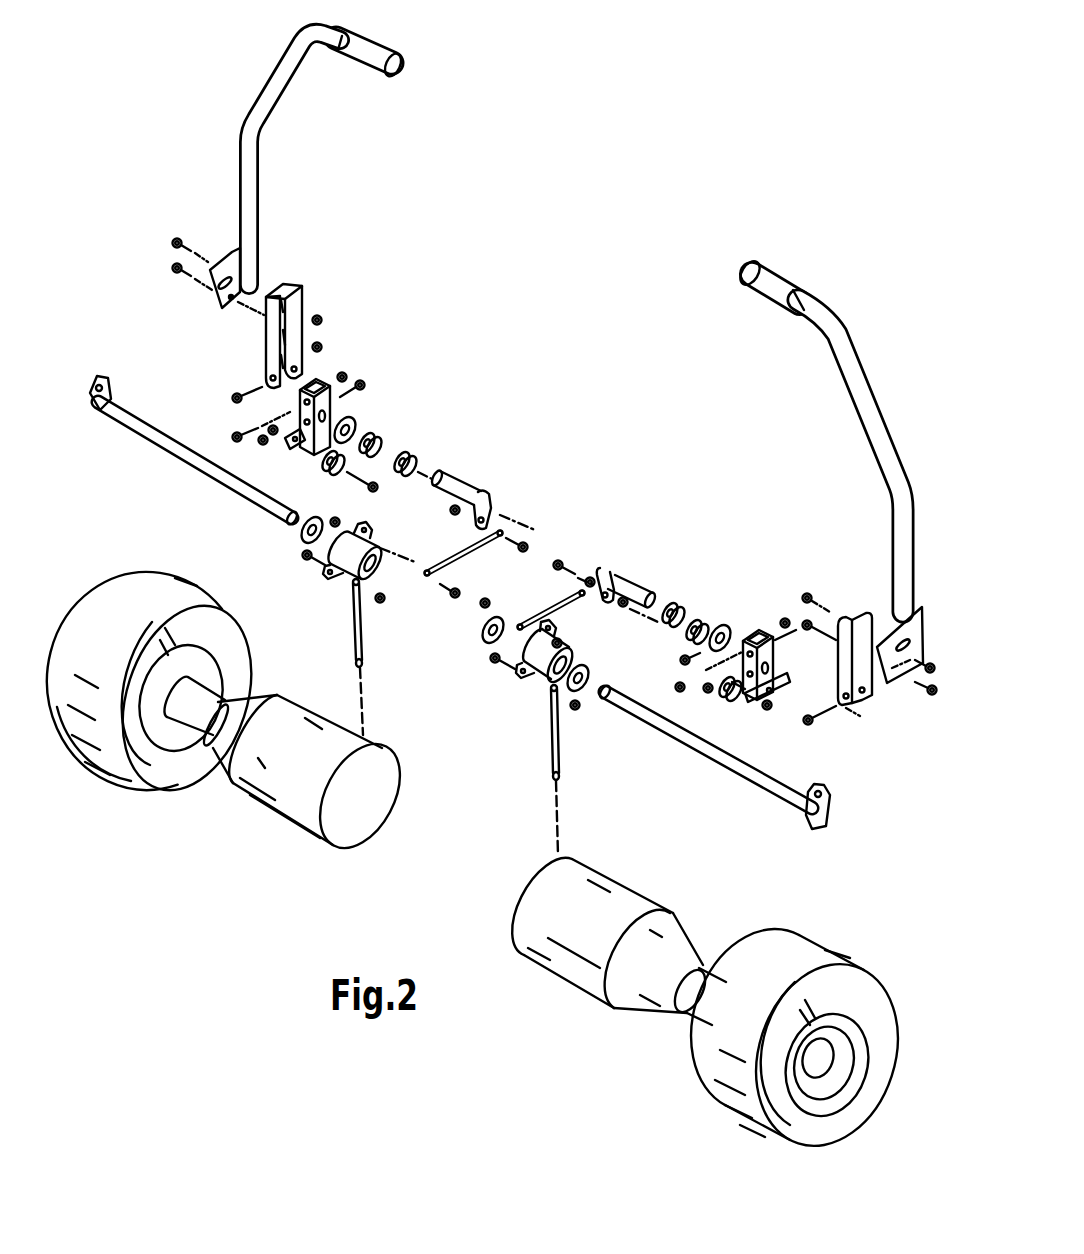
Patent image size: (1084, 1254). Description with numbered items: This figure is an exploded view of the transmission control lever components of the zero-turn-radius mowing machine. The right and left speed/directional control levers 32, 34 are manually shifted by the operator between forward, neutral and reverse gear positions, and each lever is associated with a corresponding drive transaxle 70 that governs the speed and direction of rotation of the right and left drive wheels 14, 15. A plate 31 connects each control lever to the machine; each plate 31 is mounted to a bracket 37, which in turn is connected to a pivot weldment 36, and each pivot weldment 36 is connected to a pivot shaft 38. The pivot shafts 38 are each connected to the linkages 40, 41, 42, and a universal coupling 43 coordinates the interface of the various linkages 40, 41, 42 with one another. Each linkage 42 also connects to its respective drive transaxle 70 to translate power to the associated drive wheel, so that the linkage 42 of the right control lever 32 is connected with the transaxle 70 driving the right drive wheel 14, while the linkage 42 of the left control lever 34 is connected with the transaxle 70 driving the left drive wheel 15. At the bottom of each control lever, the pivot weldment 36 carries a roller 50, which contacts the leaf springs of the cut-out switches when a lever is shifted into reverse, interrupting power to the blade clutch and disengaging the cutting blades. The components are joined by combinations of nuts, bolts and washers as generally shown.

The right drive wheel 14 is at (87, 657).
The left drive wheel 15 is at (739, 1017).
The plate 31 is at (232, 255).
The right speed/directional control lever 32 is at (253, 170).
The left speed/directional control lever 34 is at (883, 422).
The pivot weldment 36 is at (322, 386).
The bracket 37 is at (265, 333).
The pivot shaft 38 is at (458, 490).
The linkage 40 is at (549, 602).
The linkage 41 is at (240, 491).
The linkage 42 is at (360, 614).
The universal coupling 43 is at (331, 578).
The roller 50 is at (327, 462).
The drive transaxle 70 is at (286, 774).